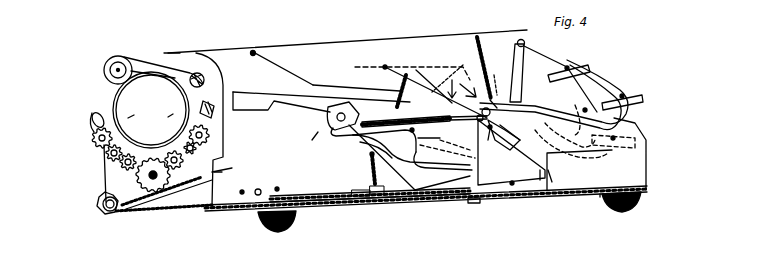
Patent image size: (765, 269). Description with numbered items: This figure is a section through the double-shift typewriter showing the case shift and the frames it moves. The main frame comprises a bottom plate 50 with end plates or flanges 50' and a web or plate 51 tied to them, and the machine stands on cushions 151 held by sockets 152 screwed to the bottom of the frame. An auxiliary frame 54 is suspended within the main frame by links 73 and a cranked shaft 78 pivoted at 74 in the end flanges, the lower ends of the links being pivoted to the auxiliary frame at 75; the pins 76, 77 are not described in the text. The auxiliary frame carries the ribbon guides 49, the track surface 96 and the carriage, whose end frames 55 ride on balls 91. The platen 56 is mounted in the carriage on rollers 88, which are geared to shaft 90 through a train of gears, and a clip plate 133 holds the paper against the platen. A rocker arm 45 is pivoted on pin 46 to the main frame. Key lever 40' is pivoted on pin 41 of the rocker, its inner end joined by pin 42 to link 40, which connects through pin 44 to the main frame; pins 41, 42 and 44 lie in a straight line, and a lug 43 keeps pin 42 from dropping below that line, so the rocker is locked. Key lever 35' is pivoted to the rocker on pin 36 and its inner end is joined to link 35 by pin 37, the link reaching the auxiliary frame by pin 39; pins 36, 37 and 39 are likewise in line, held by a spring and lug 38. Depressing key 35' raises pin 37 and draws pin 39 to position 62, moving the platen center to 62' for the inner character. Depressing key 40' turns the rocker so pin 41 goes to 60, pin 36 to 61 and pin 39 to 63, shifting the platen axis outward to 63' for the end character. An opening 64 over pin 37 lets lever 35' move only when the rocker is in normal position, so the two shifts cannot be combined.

The ribbon guides 49 is at (172, 52).
The links 73 is at (254, 52).
The pivot 74 is at (262, 56).
The auxiliary frame 54 is at (552, 154).
The platen 56 is at (151, 110).
The clip plate 133 is at (159, 87).
The outward platen axis position 63' is at (127, 119).
The inner platen center position 62' is at (169, 119).
The rollers 88 is at (95, 143).
The end frames 55 is at (151, 165).
The balls 91 is at (100, 210).
The shaft 90 is at (151, 180).
The track surface 96 is at (225, 170).
The pin 77 is at (242, 191).
The pin 76 is at (277, 188).
The lower pivot of links 75 is at (256, 195).
The bottom plate 50 is at (426, 175).
The pin 39 is at (326, 130).
The shifted position of pin 39 63 is at (308, 149).
The link 35 is at (475, 123).
The shifted position of pin 39 62 is at (361, 174).
The web or plate 51 is at (478, 45).
The pin 44 is at (384, 67).
The link 40 is at (412, 78).
The end plates or flanges 50' is at (409, 46).
The pin 42 is at (447, 81).
The lug 43 is at (468, 91).
The opening 64 is at (426, 113).
The pin 37 is at (412, 131).
The lug 38 is at (446, 144).
The shifted position of pin 36 61 is at (499, 93).
The shifted position of pin 41 60 is at (510, 118).
The cranked shaft 78 is at (545, 54).
The key lever 35' is at (575, 101).
The key lever 40' is at (624, 110).
The pin 36 is at (493, 137).
The pin 41 is at (508, 141).
The rocker arm 45 is at (511, 152).
The pin 46 is at (480, 200).
The sockets 152 is at (603, 197).
The cushions 151 is at (621, 210).